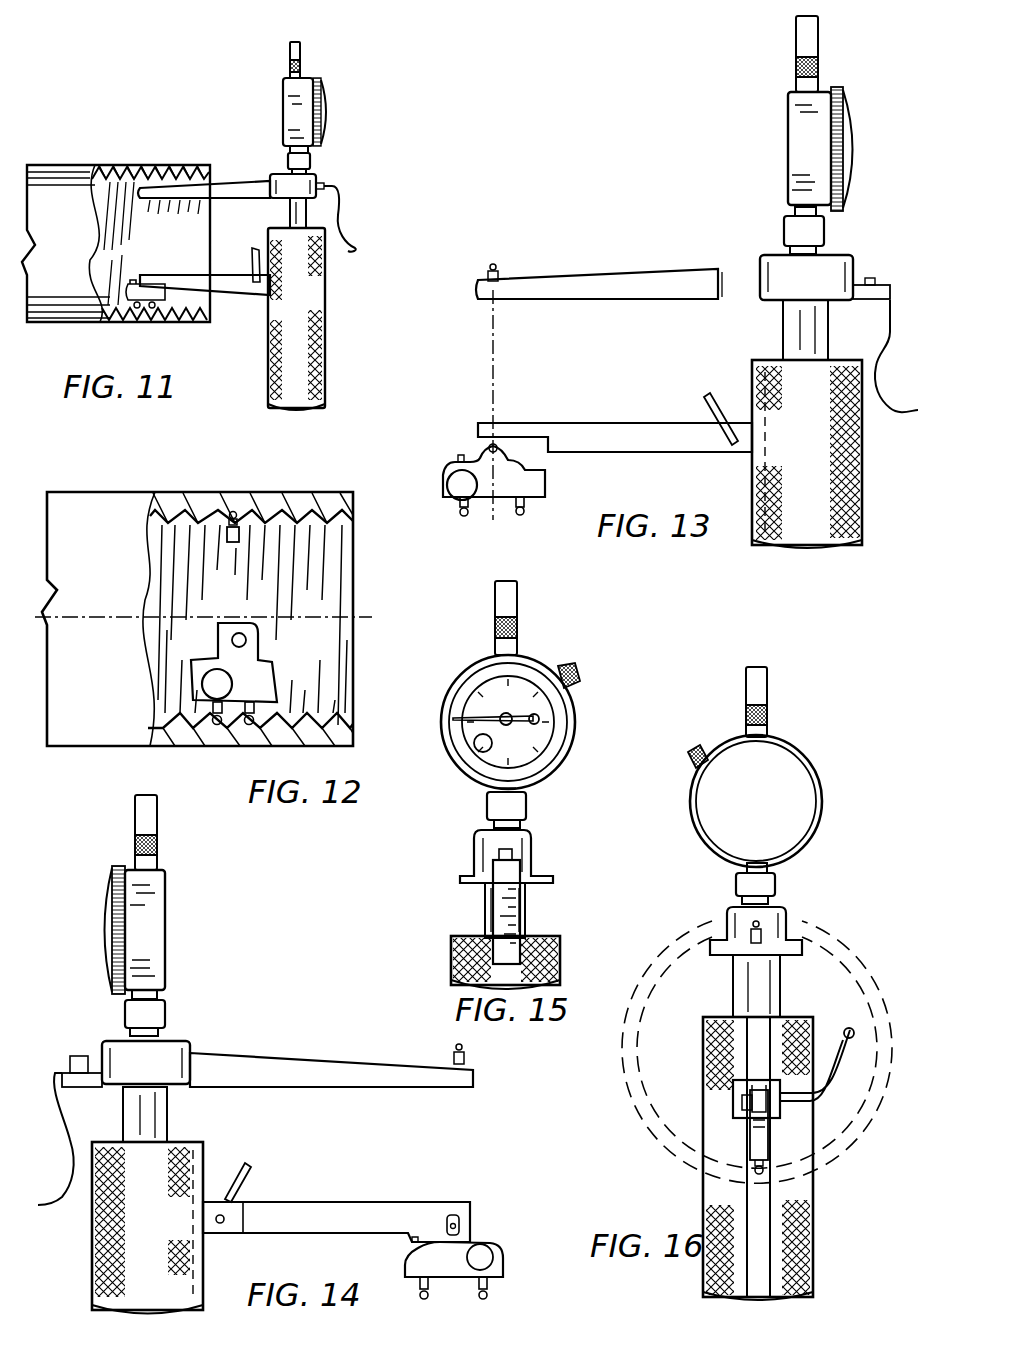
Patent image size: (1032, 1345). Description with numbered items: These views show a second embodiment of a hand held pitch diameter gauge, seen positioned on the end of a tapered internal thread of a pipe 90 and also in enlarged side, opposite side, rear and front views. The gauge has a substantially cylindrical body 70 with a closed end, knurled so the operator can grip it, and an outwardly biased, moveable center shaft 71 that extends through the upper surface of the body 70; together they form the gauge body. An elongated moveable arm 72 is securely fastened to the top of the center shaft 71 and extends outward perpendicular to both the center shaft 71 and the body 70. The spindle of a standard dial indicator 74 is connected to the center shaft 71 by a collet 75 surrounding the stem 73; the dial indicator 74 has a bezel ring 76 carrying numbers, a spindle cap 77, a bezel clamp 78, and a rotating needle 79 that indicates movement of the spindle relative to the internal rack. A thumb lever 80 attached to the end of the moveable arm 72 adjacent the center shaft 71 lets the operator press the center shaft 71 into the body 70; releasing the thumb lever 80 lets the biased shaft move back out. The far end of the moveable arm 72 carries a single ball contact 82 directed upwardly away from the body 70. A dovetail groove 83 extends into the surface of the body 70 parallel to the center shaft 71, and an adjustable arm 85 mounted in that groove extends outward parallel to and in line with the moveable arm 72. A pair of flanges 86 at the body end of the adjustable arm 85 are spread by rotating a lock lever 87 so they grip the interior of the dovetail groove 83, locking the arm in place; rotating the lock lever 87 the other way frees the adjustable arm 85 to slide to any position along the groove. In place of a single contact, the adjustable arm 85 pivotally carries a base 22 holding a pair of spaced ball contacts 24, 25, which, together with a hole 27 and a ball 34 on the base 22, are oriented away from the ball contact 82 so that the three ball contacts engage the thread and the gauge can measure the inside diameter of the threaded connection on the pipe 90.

In FIG. 12, the base 22 is at (272, 675).
In FIG. 13, the base 22 is at (546, 480).
In FIG. 14, the base 22 is at (495, 1245).
In FIG. 12, the ball contact 24 is at (215, 726).
In FIG. 13, the ball contact 24 is at (458, 512).
In FIG. 14, the ball contact 24 is at (488, 1301).
In FIG. 12, the ball contact 25 is at (252, 726).
In FIG. 13, the ball contact 25 is at (527, 512).
In FIG. 14, the ball contact 25 is at (420, 1297).
In FIG. 12, the mounting hole 27 is at (239, 640).
In FIG. 13, the mounting hole 27 is at (488, 447).
In FIG. 14, the mounting hole 27 is at (462, 1222).
In FIG. 12, the roller ball 34 is at (212, 672).
In FIG. 13, the roller ball 34 is at (456, 480).
In FIG. 11, the cylindrical body 70 is at (325, 335).
In FIG. 13, the cylindrical body 70 is at (862, 437).
In FIG. 14, the cylindrical body 70 is at (92, 1215).
In FIG. 15, the cylindrical body 70 is at (561, 944).
In FIG. 16, the cylindrical body 70 is at (815, 1213).
In FIG. 11, the center shaft 71 is at (310, 211).
In FIG. 13, the center shaft 71 is at (783, 332).
In FIG. 14, the center shaft 71 is at (168, 1108).
In FIG. 15, the center shaft 71 is at (526, 893).
In FIG. 16, the center shaft 71 is at (781, 968).
In FIG. 11, the moveable arm 72 is at (240, 185).
In FIG. 13, the moveable arm 72 is at (603, 278).
In FIG. 14, the moveable arm 72 is at (310, 1062).
In FIG. 15, the moveable arm 72 is at (532, 843).
In FIG. 16, the moveable arm 72 is at (790, 925).
In FIG. 11, the stem 73 is at (290, 150).
In FIG. 13, the stem 73 is at (793, 212).
In FIG. 14, the stem 73 is at (160, 996).
In FIG. 16, the stem 73 is at (746, 868).
In FIG. 11, the dial indicator 74 is at (323, 95).
In FIG. 13, the dial indicator 74 is at (855, 115).
In FIG. 14, the dial indicator 74 is at (168, 905).
In FIG. 15, the dial indicator 74 is at (575, 707).
In FIG. 16, the dial indicator 74 is at (812, 774).
In FIG. 11, the collet 75 is at (312, 159).
In FIG. 13, the collet 75 is at (825, 231).
In FIG. 14, the collet 75 is at (167, 1016).
In FIG. 15, the collet 75 is at (527, 801).
In FIG. 16, the collet 75 is at (777, 882).
In FIG. 13, the bezel ring 76 is at (840, 88).
In FIG. 14, the bezel ring 76 is at (118, 864).
In FIG. 15, the bezel ring 76 is at (555, 747).
In FIG. 11, the spindle cap 77 is at (300, 42).
In FIG. 13, the spindle cap 77 is at (797, 42).
In FIG. 14, the spindle cap 77 is at (160, 823).
In FIG. 15, the spindle cap 77 is at (518, 595).
In FIG. 16, the spindle cap 77 is at (768, 680).
In FIG. 15, the bezel clamp 78 is at (580, 672).
In FIG. 16, the bezel clamp 78 is at (700, 752).
In FIG. 15, the rotating needle 79 is at (480, 715).
In FIG. 11, the thumb lever 80 is at (339, 222).
In FIG. 13, the thumb lever 80 is at (890, 320).
In FIG. 14, the thumb lever 80 is at (73, 1135).
In FIG. 15, the thumb lever 80 is at (493, 906).
In FIG. 12, the ball contact 82 is at (236, 510).
In FIG. 13, the ball contact 82 is at (493, 258).
In FIG. 14, the ball contact 82 is at (455, 1048).
In FIG. 16, the ball contact 82 is at (750, 924).
In FIG. 13, the dovetail groove 83 is at (763, 462).
In FIG. 14, the dovetail groove 83 is at (193, 1247).
In FIG. 16, the dovetail groove 83 is at (760, 1210).
In FIG. 11, the adjustable arm 85 is at (230, 292).
In FIG. 13, the adjustable arm 85 is at (593, 423).
In FIG. 14, the adjustable arm 85 is at (357, 1202).
In FIG. 16, the flanges 86 is at (733, 1100).
In FIG. 13, the lock lever 87 is at (706, 404).
In FIG. 14, the lock lever 87 is at (250, 1168).
In FIG. 16, the lock lever 87 is at (848, 1045).
In FIG. 11, the pipe 90 is at (70, 165).
In FIG. 12, the pipe 90 is at (100, 492).
In FIG. 16, the pipe 90 is at (628, 1085).